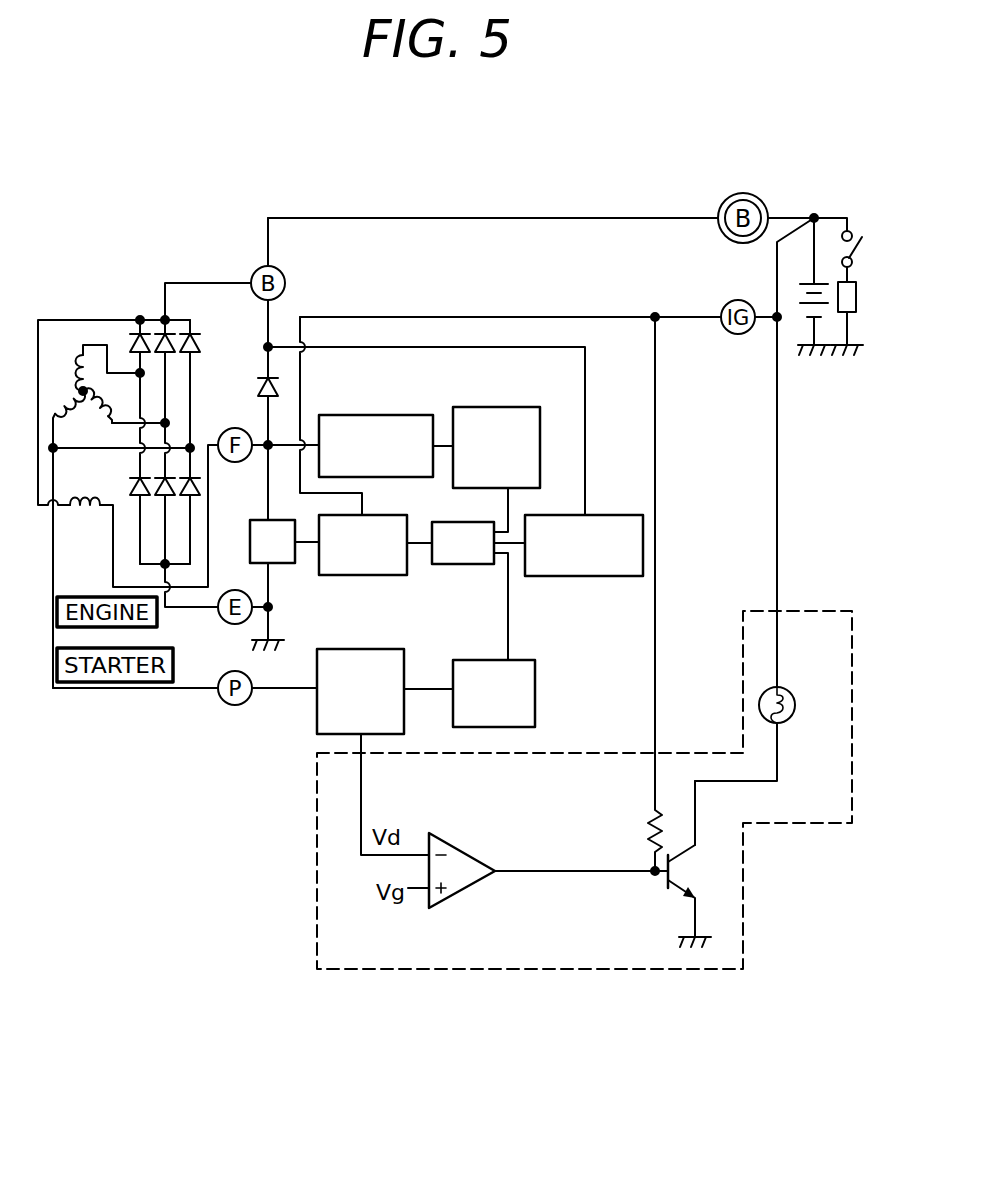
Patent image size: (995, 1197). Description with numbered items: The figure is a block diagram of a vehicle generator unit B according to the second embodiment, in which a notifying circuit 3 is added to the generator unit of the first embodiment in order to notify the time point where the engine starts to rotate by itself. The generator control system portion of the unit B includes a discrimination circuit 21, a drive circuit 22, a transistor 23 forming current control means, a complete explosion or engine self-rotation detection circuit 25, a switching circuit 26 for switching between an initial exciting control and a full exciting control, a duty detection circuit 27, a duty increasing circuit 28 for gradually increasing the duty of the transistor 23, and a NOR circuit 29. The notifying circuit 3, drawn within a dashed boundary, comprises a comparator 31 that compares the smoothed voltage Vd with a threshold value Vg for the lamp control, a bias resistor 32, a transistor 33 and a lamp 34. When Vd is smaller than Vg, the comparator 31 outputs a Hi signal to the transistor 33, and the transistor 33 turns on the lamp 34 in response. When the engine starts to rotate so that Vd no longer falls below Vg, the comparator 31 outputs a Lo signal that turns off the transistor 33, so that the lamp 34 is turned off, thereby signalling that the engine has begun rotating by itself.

The vehicle generator unit B is at (505, 198).
The notifying circuit 3 is at (616, 970).
The discrimination circuit 21 is at (626, 577).
The drive circuit 22 is at (338, 575).
The transistor 23 is at (285, 563).
The engine self-rotation detection circuit 25 is at (363, 649).
The switching circuit 26 is at (535, 712).
The duty detection circuit 27 is at (337, 415).
The duty increasing circuit 28 is at (466, 407).
The NOR circuit 29 is at (450, 564).
The comparator 31 is at (466, 890).
The bias resistor 32 is at (647, 831).
The transistor 33 is at (683, 884).
The lamp 34 is at (795, 705).